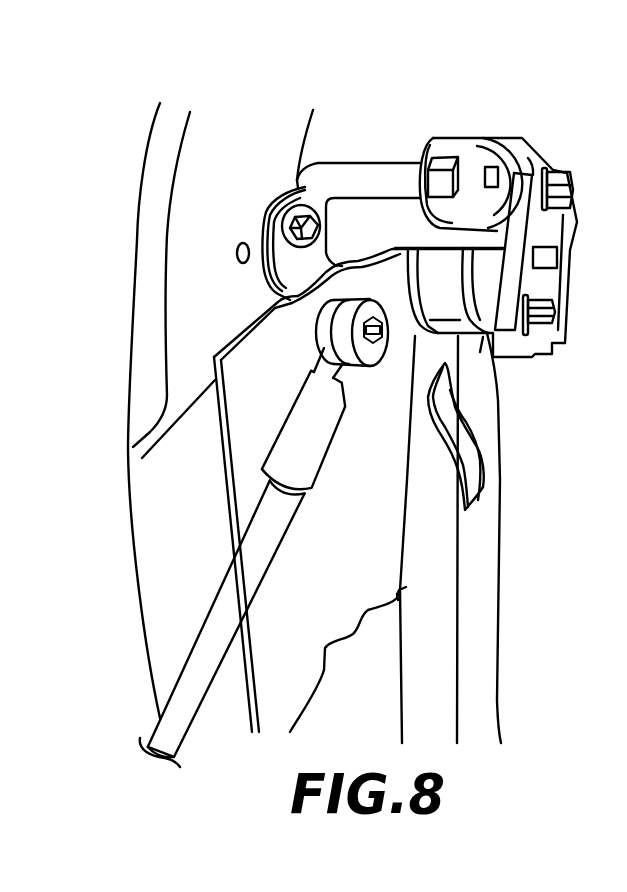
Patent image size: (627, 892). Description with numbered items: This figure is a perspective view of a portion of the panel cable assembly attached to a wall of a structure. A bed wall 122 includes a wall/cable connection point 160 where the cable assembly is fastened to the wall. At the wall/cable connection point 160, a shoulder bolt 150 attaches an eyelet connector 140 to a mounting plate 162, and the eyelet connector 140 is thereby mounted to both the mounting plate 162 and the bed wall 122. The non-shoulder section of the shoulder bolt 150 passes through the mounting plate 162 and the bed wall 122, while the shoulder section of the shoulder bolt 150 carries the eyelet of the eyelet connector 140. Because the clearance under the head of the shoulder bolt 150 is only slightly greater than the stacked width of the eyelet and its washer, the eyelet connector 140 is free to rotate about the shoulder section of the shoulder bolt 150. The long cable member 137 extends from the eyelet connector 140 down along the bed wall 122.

The bed wall 122 is at (210, 212).
The cable 137 is at (192, 682).
The eyelet connector 140 is at (323, 363).
The shoulder bolt 150 is at (367, 352).
The wall/cable connection point 160 is at (366, 118).
The mounting plate 162 is at (353, 522).